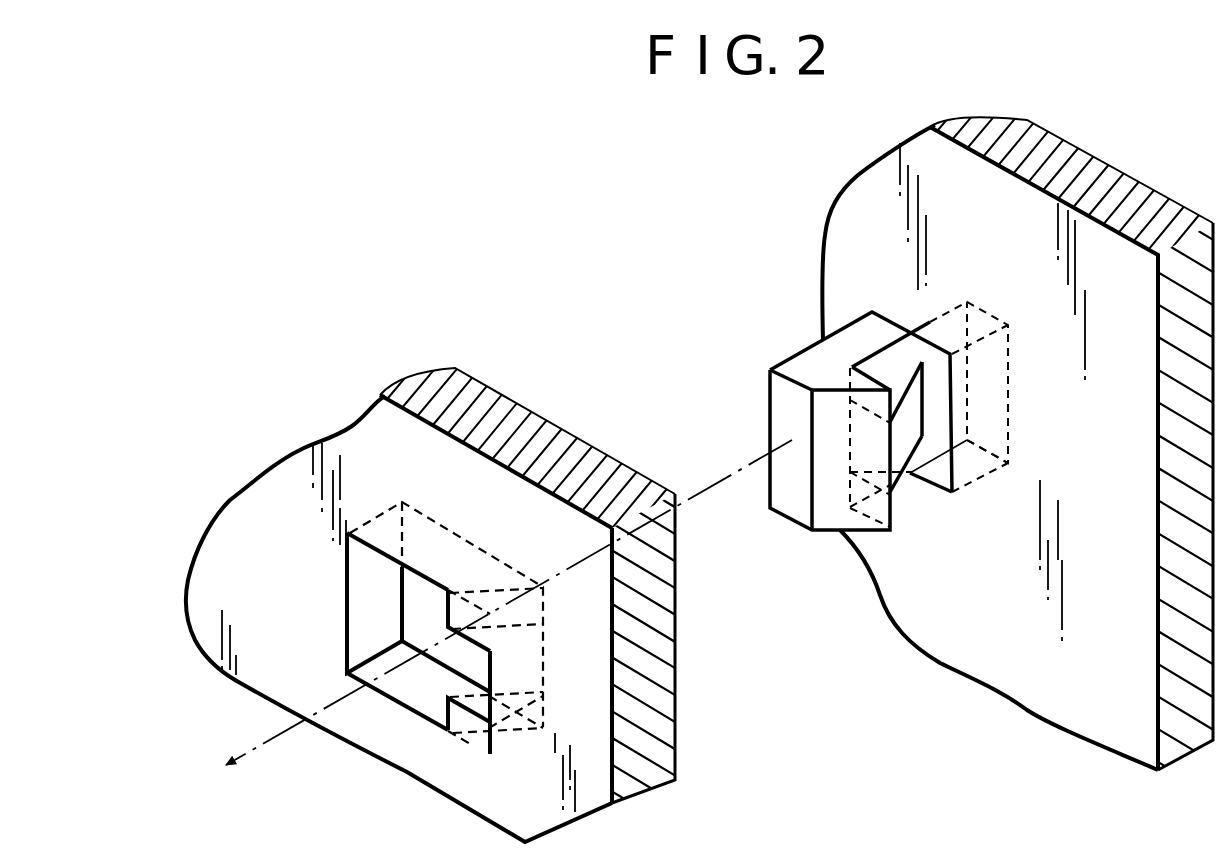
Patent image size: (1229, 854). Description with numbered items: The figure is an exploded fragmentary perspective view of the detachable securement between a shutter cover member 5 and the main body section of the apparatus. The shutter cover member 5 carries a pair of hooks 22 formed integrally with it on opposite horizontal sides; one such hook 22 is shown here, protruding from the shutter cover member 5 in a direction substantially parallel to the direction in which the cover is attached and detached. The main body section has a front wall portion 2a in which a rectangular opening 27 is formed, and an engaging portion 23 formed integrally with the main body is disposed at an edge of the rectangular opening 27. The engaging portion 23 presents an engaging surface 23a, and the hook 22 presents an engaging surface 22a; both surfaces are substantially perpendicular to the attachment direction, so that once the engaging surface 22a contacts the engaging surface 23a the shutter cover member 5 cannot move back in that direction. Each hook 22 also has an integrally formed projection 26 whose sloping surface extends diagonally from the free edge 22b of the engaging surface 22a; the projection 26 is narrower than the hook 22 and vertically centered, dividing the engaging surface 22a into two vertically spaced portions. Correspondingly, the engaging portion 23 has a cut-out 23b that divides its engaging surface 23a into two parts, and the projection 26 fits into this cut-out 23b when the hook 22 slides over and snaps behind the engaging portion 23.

The front wall portion 2a is at (441, 397).
The rectangular opening 27 is at (376, 611).
The engaging portion 23 is at (436, 605).
The engaging surface 23a is at (466, 618).
The cut-out 23b is at (430, 657).
The shutter cover member 5 is at (1036, 683).
The hook 22 is at (789, 490).
The engaging surface 22a is at (918, 413).
The free edge 22b is at (887, 533).
The projection 26 is at (917, 407).